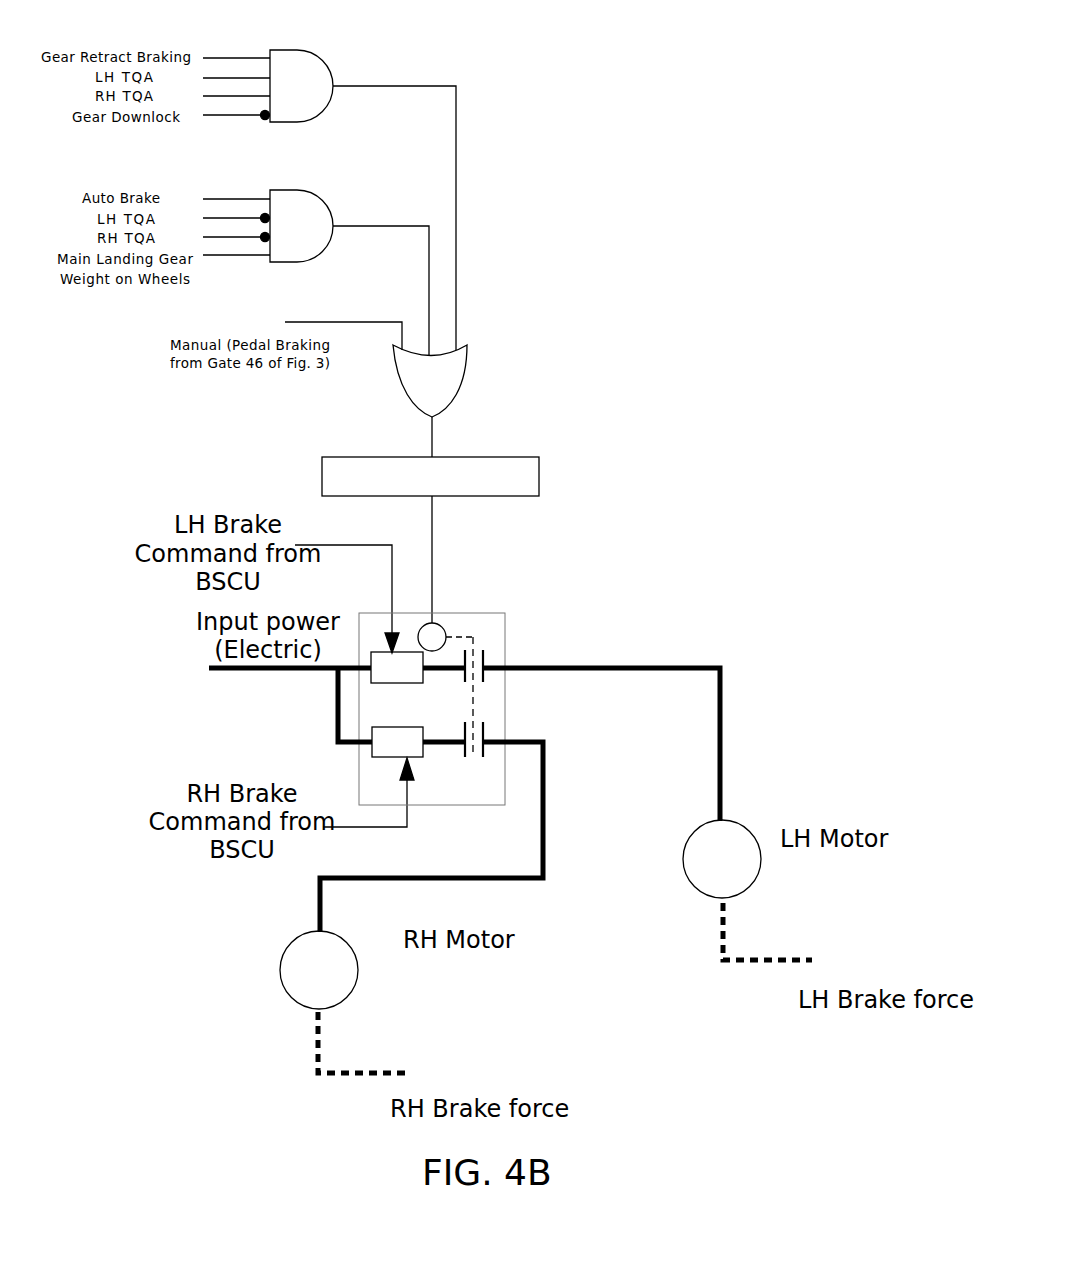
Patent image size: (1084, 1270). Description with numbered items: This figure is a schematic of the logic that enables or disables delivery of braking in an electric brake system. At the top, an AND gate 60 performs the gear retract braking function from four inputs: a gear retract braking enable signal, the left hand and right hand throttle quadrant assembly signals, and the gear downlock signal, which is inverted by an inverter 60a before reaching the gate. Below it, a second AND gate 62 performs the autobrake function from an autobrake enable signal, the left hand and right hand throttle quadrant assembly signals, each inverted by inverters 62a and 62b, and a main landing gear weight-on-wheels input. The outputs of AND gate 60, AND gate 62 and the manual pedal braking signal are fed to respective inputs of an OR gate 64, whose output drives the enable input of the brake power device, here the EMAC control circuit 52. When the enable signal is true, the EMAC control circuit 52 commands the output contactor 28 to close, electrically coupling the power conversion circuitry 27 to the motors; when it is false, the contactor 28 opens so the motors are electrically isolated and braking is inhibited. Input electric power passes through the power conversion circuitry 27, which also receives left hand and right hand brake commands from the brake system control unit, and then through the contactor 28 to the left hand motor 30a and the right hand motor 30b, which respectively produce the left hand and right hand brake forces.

The AND gate 60 is at (285, 48).
The inverter 60a is at (262, 118).
The AND gate 62 is at (310, 261).
The inverter 62a is at (262, 214).
The inverter 62b is at (262, 242).
The OR gate 64 is at (467, 370).
The EMAC control circuit 52 is at (350, 458).
The power conversion circuitry 27 is at (390, 685).
The output contactor 28 is at (462, 683).
The left hand motor 30a is at (725, 817).
The right hand motor 30b is at (333, 930).